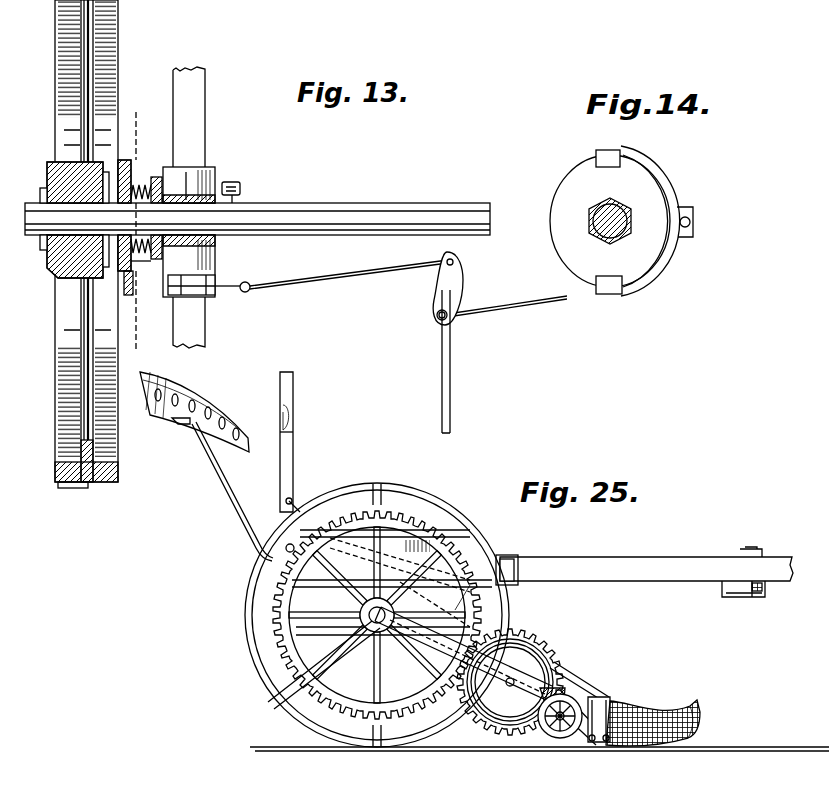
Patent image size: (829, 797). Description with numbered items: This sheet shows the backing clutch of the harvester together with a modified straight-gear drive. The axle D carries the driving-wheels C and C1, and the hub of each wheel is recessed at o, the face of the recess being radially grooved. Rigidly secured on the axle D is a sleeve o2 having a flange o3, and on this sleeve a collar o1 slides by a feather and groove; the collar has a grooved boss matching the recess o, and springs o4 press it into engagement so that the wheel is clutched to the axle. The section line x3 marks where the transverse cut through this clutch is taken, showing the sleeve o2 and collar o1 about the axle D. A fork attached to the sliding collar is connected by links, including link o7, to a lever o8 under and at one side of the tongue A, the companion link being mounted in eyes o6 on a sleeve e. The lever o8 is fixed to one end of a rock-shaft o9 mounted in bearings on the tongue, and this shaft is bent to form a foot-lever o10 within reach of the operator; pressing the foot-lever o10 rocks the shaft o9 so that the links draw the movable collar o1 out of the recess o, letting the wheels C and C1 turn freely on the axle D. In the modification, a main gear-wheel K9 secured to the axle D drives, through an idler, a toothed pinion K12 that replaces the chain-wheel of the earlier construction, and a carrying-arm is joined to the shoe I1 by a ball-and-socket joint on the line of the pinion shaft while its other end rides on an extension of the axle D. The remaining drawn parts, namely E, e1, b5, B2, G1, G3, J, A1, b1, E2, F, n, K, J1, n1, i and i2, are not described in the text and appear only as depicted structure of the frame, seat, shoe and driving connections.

In FIG. 13, the driving-wheel C is at (112, 86).
In FIG. 13, the section line x3 is at (135, 228).
In FIG. 13, the recess o is at (50, 180).
In FIG. 13, the sliding collar o1 is at (137, 168).
In FIG. 14, the sliding collar o1 is at (556, 208).
In FIG. 13, the sleeve o2 is at (153, 176).
In FIG. 14, the sleeve o2 is at (608, 160).
In FIG. 13, the flange o3 is at (158, 176).
In FIG. 13, the springs o4 is at (142, 261).
In FIG. 13, the rod E is at (212, 118).
In FIG. 13, the sleeve e is at (232, 180).
In FIG. 13, the axle D is at (310, 206).
In FIG. 14, the axle D is at (598, 238).
In FIG. 25, the axle D is at (370, 630).
In FIG. 13, the hub sleeve e1 is at (215, 250).
In FIG. 13, the pin b5 is at (166, 289).
In FIG. 13, the eyes o6 is at (218, 292).
In FIG. 13, the link o7 is at (360, 286).
In FIG. 13, the lever o8 is at (460, 268).
In FIG. 13, the rock-shaft o9 is at (435, 293).
In FIG. 13, the foot-lever o10 is at (453, 333).
In FIG. 25, the seat B2 is at (222, 396).
In FIG. 25, the seat support leg G1 is at (288, 545).
In FIG. 25, the post G3 is at (293, 386).
In FIG. 25, the pin J is at (293, 452).
In FIG. 25, the tongue A is at (613, 570).
In FIG. 25, the frame plate A1 is at (397, 572).
In FIG. 25, the bracket b1 is at (508, 556).
In FIG. 25, the driving-wheel C1 is at (460, 515).
In FIG. 25, the gear ring E2 is at (312, 618).
In FIG. 25, the frame member F is at (420, 590).
In FIG. 25, the crank arm n is at (423, 640).
In FIG. 25, the main gear-wheel K9 is at (300, 660).
In FIG. 25, the pinion K is at (548, 646).
In FIG. 25, the pinion K12 is at (590, 648).
In FIG. 25, the pedal arm J1 is at (575, 700).
In FIG. 25, the roller n1 is at (552, 730).
In FIG. 25, the pin i is at (595, 743).
In FIG. 25, the pin i2 is at (610, 742).
In FIG. 25, the shoe I1 is at (638, 714).